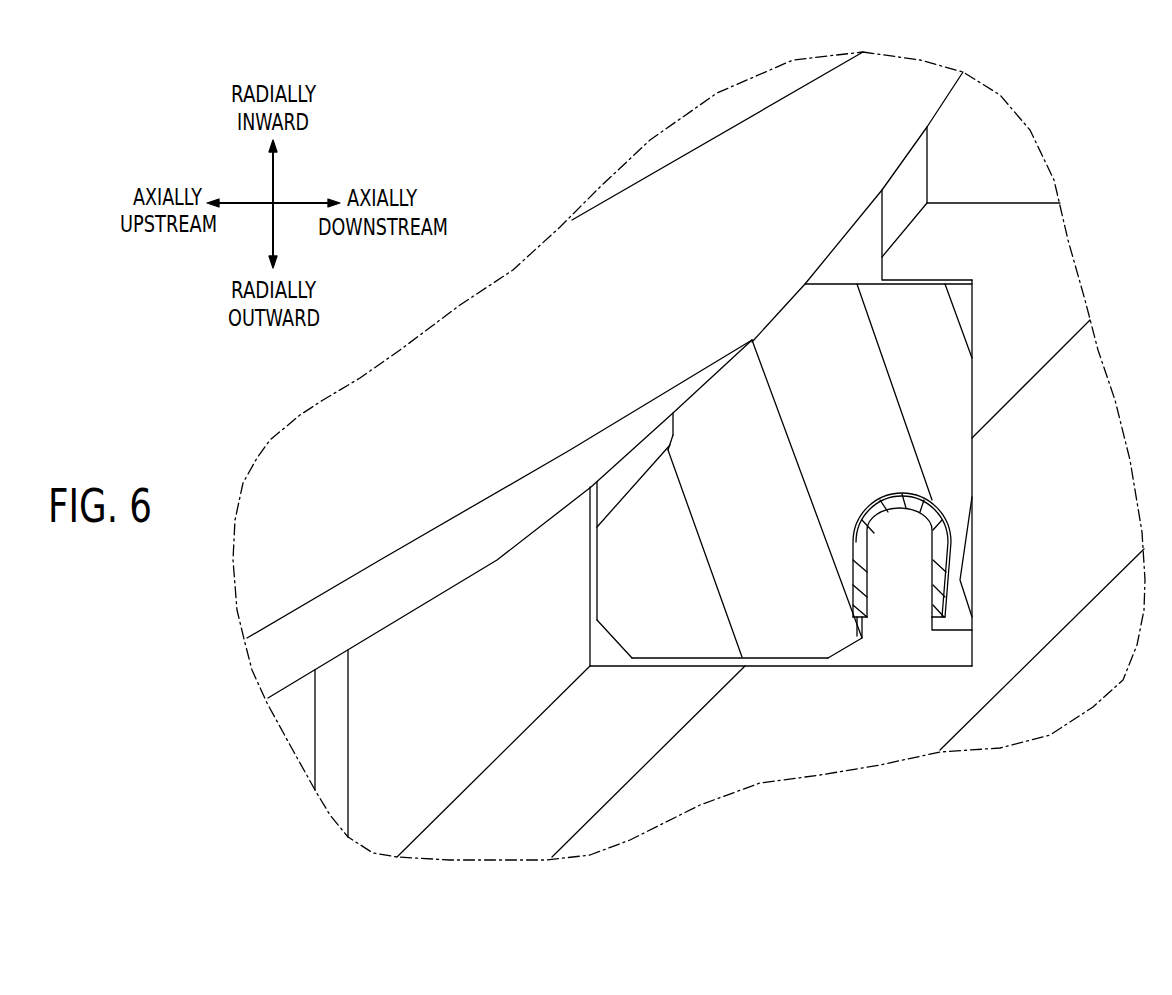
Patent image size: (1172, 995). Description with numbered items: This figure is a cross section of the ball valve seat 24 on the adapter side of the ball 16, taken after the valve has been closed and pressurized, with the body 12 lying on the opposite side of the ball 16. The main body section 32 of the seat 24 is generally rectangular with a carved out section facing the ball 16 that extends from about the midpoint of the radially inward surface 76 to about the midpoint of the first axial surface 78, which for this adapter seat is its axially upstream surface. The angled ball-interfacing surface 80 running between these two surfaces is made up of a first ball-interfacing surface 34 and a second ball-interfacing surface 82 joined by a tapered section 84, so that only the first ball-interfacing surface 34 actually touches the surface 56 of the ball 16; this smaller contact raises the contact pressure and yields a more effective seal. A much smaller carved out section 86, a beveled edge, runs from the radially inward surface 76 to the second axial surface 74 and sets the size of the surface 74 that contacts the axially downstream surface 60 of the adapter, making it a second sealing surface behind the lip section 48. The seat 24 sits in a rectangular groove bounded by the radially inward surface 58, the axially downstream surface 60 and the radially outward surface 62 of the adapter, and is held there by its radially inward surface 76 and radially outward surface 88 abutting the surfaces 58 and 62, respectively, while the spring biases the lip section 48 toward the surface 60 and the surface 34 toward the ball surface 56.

The body 12 is at (807, 732).
The ball 16 is at (548, 295).
The seat 24 is at (772, 550).
The main body section 32 is at (635, 620).
The first ball-interfacing surface 34 is at (687, 410).
The lip section 48 is at (972, 615).
The surface of the ball 56 is at (630, 455).
The radially inward surface of the adapter 58 is at (913, 280).
The axially downstream surface of the adapter 60 is at (974, 565).
The radially outward surface of the adapter 62 is at (695, 668).
The second axial surface 74 is at (970, 407).
The radially inward surface 76 is at (817, 284).
The first axial surface 78 is at (597, 586).
The ball-interfacing surface 80 is at (700, 469).
The second ball-interfacing surface 82 is at (632, 486).
The tapered section 84 is at (675, 437).
The carved out section 86 is at (955, 317).
The radially outward surface of the adapter seat 88 is at (687, 657).